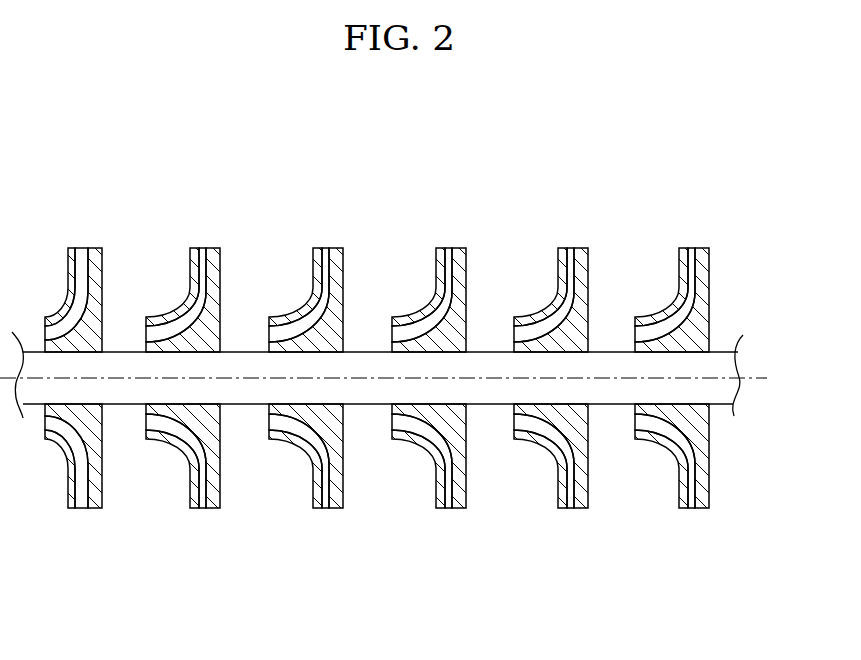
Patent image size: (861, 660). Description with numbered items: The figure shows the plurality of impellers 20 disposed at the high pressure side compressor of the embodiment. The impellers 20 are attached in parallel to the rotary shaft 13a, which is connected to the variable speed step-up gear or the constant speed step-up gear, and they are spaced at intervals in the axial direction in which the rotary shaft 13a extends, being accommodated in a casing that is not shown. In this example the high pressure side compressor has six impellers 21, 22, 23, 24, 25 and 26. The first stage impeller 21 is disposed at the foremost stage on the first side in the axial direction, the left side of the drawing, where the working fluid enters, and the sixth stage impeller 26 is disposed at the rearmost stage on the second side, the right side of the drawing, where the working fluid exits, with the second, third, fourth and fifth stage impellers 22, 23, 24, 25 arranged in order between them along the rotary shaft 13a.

The rotary shaft 13a is at (742, 352).
The impellers 20 is at (389, 370).
The first stage impeller 21 is at (76, 370).
The second stage impeller 22 is at (202, 370).
The third stage impeller 23 is at (325, 370).
The fourth stage impeller 24 is at (446, 370).
The fifth stage impeller 25 is at (567, 370).
The sixth stage impeller 26 is at (688, 370).